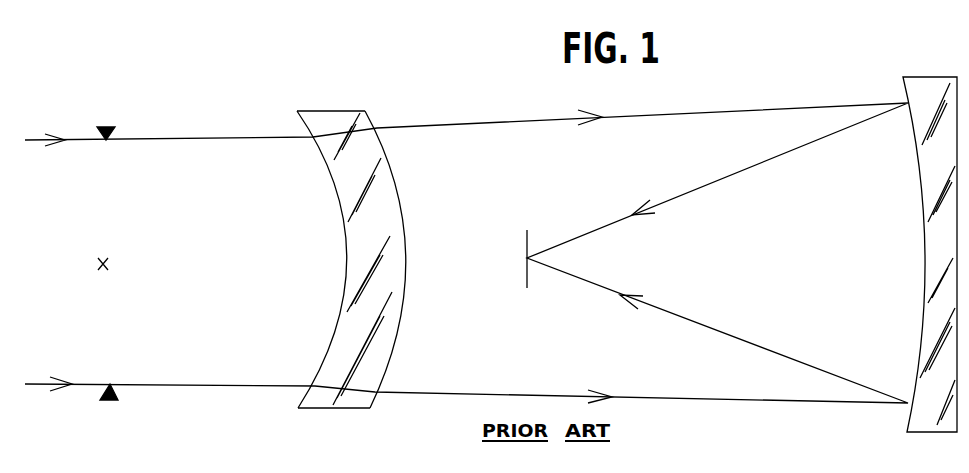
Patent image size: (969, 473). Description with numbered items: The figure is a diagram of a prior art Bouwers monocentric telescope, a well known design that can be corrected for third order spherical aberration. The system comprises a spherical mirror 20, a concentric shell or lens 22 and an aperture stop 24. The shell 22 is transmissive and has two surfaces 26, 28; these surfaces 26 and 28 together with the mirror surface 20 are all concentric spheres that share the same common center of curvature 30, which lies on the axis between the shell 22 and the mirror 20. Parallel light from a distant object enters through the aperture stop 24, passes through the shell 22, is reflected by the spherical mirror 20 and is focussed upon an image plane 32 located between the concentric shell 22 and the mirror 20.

The spherical mirror 20 is at (905, 418).
The concentric shell 22 is at (363, 238).
The aperture stop 24 is at (112, 127).
The surface 26 is at (338, 197).
The surface 28 is at (398, 185).
The common center of curvature 30 is at (110, 265).
The image plane 32 is at (528, 278).